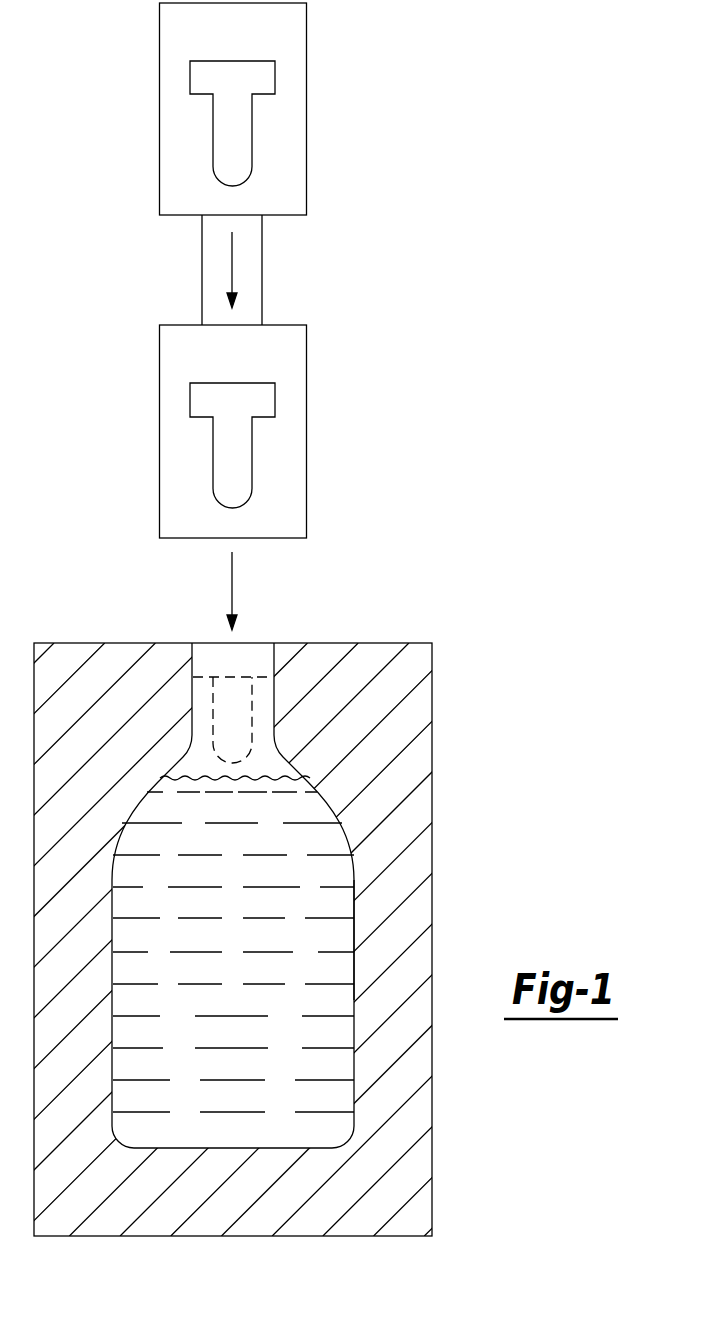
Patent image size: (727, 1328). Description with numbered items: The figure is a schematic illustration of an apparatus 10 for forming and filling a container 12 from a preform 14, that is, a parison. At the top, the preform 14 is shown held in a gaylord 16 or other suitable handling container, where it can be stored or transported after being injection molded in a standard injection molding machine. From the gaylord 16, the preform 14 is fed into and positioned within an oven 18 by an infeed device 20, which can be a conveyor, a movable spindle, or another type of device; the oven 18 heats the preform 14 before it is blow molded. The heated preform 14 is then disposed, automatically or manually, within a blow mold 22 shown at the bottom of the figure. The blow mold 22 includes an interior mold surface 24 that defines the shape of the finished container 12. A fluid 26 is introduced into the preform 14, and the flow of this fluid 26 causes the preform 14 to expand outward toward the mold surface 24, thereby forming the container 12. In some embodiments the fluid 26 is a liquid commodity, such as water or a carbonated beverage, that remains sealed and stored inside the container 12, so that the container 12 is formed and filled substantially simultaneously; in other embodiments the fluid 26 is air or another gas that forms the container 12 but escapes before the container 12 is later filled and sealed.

The apparatus 10 is at (484, 280).
The container 12 is at (352, 830).
The preform 14 is at (275, 72).
The gaylord 16 is at (290, 188).
The oven 18 is at (290, 510).
The infeed device 20 is at (262, 270).
The blow mold 22 is at (420, 763).
The interior mold surface 24 is at (357, 937).
The fluid 26 is at (193, 777).